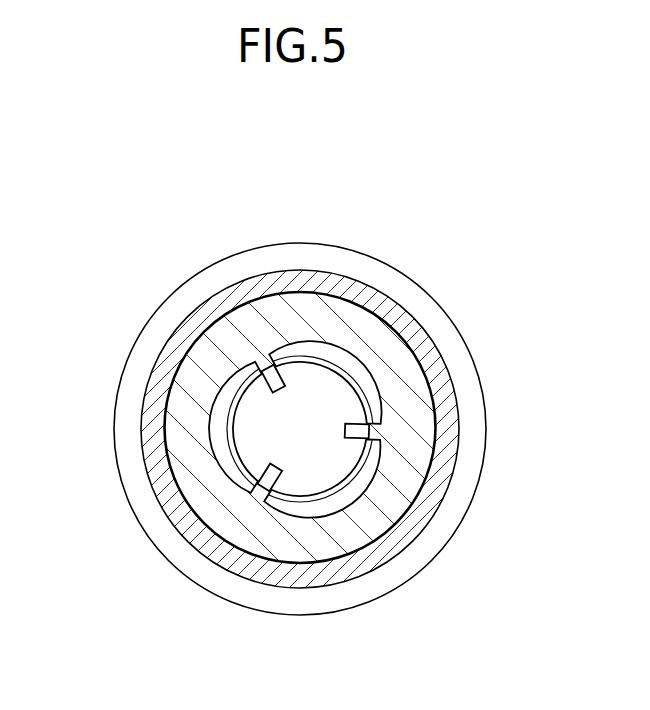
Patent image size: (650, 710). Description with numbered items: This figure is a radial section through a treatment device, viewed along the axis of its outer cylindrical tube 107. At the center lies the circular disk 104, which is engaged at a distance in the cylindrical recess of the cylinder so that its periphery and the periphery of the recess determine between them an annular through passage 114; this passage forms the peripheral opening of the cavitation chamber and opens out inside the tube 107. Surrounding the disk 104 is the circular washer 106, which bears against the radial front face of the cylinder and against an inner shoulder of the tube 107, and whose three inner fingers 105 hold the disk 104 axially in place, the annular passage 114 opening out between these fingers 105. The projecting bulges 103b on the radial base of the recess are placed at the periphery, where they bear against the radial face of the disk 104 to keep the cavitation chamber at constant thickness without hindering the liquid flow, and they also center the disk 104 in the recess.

The projecting bulges 103b is at (233, 463).
The circular disk 104 is at (295, 478).
The inner fingers 105 is at (375, 480).
The circular washer 106 is at (380, 342).
The outer cylindrical tube 107 is at (155, 391).
The annular through passage 114 is at (333, 500).